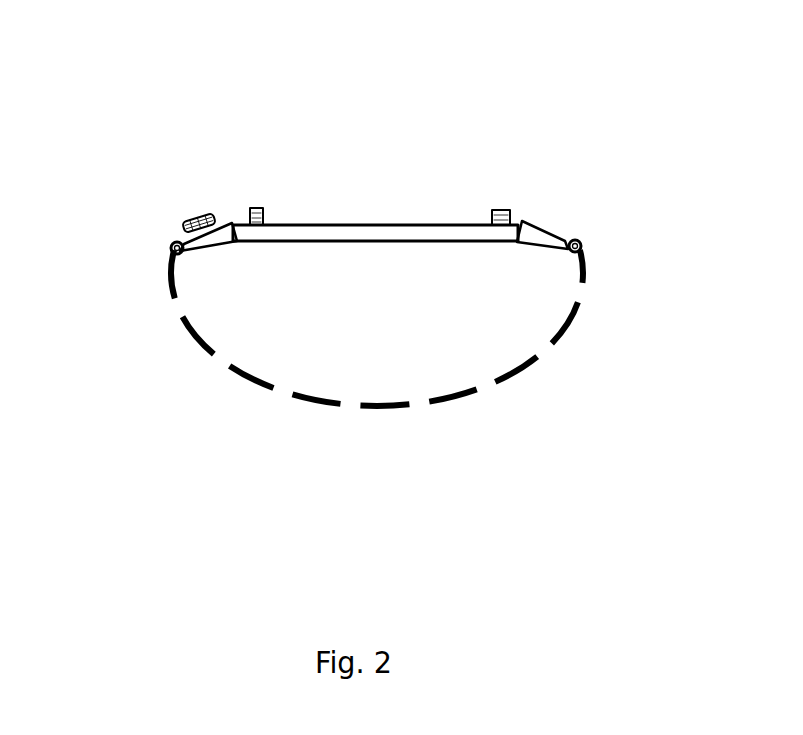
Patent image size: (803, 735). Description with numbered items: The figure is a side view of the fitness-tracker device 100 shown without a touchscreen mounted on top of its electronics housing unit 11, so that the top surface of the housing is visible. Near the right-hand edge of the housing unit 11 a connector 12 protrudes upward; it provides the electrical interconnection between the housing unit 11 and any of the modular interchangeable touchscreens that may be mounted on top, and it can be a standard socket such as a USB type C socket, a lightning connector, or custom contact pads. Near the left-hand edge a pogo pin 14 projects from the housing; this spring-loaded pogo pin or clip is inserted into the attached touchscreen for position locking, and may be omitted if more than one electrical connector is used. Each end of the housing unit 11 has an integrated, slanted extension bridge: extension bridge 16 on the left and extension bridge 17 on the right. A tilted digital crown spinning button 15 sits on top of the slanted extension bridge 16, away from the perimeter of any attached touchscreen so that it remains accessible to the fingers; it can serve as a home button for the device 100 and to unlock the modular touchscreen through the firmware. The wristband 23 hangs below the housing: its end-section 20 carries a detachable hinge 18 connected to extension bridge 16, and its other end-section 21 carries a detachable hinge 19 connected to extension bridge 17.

The fitness-tracker device 100 is at (160, 60).
The electronics housing unit 11 is at (377, 243).
The connector 12 is at (495, 208).
The pogo pin 14 is at (257, 208).
The digital crown spinning button 15 is at (193, 212).
The extension bridge 16 is at (212, 250).
The extension bridge 17 is at (547, 225).
The detachable hinge 18 is at (170, 248).
The detachable hinge 19 is at (583, 243).
The end-section 20 is at (170, 282).
The end-section 21 is at (585, 274).
The wristband 23 is at (385, 408).